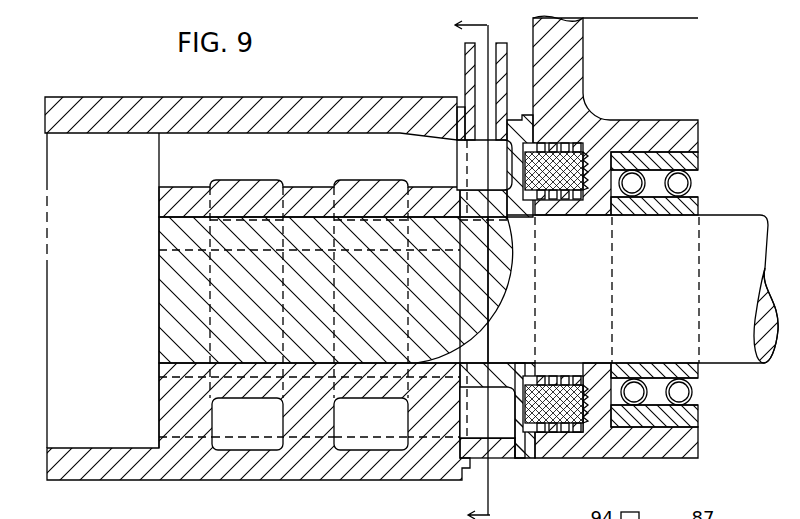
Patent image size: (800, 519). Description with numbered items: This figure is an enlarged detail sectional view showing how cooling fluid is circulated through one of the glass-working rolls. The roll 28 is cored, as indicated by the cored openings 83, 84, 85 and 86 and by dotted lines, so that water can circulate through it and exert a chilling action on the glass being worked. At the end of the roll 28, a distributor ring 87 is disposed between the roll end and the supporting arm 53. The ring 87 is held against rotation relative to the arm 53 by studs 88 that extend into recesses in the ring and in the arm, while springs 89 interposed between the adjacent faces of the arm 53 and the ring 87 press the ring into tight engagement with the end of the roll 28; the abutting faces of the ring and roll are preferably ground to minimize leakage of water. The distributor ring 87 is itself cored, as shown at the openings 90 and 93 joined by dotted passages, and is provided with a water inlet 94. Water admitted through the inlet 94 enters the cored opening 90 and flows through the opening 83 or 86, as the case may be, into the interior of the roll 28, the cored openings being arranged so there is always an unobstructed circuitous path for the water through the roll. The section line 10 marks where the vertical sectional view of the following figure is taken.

The section line 10 is at (485, 267).
The roll 28 is at (78, 112).
The supporting arm 53 is at (687, 91).
The cored opening 83 is at (285, 140).
The cored opening 84 is at (103, 290).
The cored opening 85 is at (247, 424).
The cored opening 86 is at (371, 424).
The distributor ring 87 is at (507, 448).
The stud 88 is at (592, 148).
The spring 89 is at (577, 143).
The cored opening 90 is at (484, 178).
The cored opening 93 is at (487, 400).
The water inlet 94 is at (480, 73).